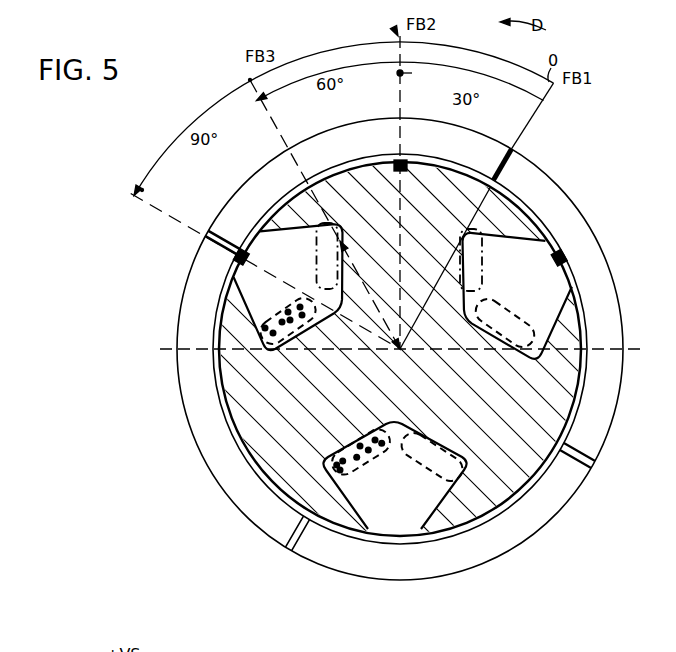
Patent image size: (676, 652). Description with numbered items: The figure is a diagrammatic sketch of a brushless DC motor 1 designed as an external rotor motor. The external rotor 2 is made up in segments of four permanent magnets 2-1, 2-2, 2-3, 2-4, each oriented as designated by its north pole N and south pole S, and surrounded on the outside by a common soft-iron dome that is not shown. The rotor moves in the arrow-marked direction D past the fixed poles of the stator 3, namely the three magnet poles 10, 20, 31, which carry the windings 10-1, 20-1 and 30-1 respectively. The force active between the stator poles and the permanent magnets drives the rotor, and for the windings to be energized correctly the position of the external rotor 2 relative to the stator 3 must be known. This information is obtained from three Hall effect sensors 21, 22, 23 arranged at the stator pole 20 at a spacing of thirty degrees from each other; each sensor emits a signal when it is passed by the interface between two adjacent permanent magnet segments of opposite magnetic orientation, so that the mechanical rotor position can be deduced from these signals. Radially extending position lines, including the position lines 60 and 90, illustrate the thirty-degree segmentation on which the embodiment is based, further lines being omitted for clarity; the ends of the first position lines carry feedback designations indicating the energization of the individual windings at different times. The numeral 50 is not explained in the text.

The motor 1 is at (150, 330).
The external rotor 2 is at (610, 431).
The permanent magnet segment 2-1 is at (493, 152).
The permanent magnet segment 2-2 is at (208, 447).
The permanent magnet segment 2-3 is at (510, 548).
The permanent magnet segment 2-4 is at (573, 212).
The stator 3 is at (424, 534).
The magnet pole 10 is at (272, 413).
The winding 10-1 is at (370, 463).
The magnet pole 20 is at (431, 283).
The winding 20-1 is at (322, 253).
The Hall effect sensor 21 is at (316, 193).
The Hall effect sensor 22 is at (408, 170).
The Hall effect sensor 23 is at (492, 194).
The winding 30-1 is at (425, 460).
The magnet pole 31 is at (338, 360).
The reference position 50 is at (398, 36).
The position line 60 is at (250, 80).
The position line 90 is at (142, 190).